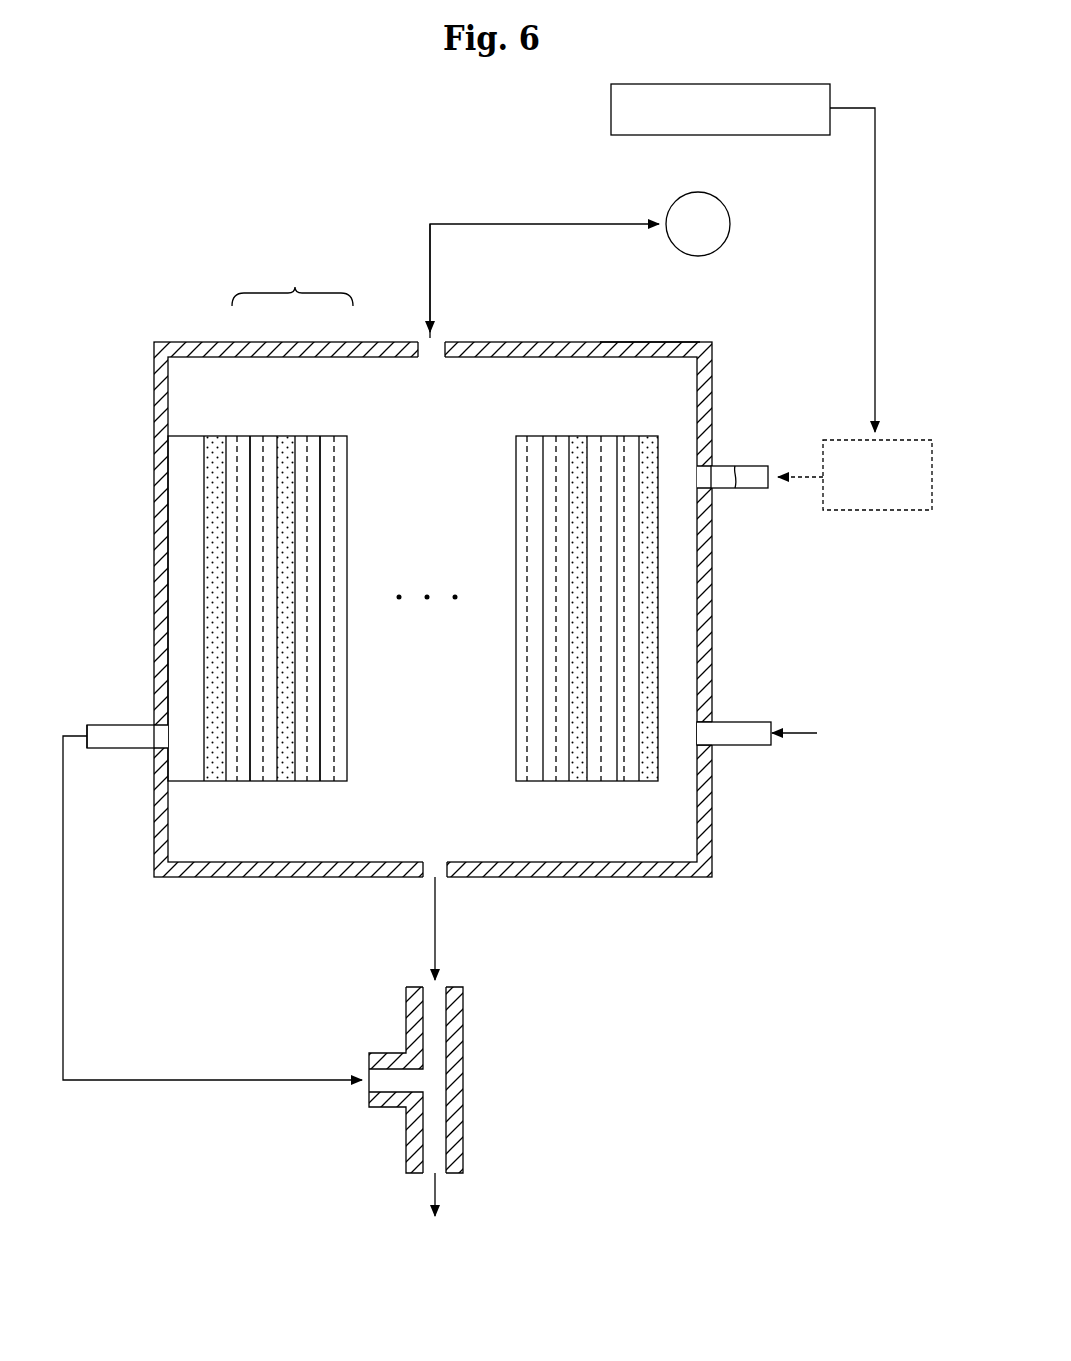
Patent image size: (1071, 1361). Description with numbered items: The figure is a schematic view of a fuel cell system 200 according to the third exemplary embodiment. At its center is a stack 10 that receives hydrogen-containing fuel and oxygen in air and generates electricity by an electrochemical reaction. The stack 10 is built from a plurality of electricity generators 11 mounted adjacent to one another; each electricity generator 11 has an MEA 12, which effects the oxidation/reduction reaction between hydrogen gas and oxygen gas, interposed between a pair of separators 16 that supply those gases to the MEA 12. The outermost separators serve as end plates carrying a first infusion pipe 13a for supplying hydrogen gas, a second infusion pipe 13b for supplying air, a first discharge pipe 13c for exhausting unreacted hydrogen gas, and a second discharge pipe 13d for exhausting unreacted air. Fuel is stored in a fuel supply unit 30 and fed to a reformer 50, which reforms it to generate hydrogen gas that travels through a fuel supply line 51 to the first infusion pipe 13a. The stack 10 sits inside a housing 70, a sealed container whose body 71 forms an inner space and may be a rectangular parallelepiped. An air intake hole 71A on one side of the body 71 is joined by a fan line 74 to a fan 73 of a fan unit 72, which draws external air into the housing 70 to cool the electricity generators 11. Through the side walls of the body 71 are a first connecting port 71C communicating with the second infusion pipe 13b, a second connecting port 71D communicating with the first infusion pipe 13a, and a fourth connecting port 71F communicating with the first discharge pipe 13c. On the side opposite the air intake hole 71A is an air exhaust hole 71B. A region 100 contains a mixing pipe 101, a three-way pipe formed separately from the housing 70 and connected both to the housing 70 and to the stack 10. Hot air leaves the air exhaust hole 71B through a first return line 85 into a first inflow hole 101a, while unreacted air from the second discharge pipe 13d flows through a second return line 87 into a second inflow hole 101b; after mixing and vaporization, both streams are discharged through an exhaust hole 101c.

The fuel cell system 200 is at (146, 236).
The stack 10 is at (252, 826).
The electricity generator 11 is at (292, 282).
The MEA 12 is at (285, 436).
The separator 16 is at (263, 436).
The housing 70 is at (714, 332).
The body 71 is at (651, 342).
The air intake hole 71A is at (440, 341).
The air exhaust hole 71B is at (426, 878).
The first connecting port 71C is at (713, 723).
The second connecting port 71D is at (713, 482).
The fourth connecting port 71F is at (152, 729).
The first infusion pipe 13a is at (754, 466).
The second infusion pipe 13b is at (723, 467).
The first discharge pipe 13c is at (130, 724).
The second discharge pipe 13d is at (108, 748).
The fuel supply unit 30 is at (611, 105).
The reformer 50 is at (900, 440).
The fuel supply line 51 is at (800, 477).
The fan unit 72 is at (655, 260).
The fan 73 is at (706, 194).
The fan line 74 is at (572, 226).
The first return line 85 is at (437, 913).
The second return line 87 is at (64, 965).
The region 100 is at (429, 1086).
The mixing pipe 101 is at (464, 1073).
The first inflow hole 101a is at (440, 987).
The second inflow hole 101b is at (369, 1070).
The exhaust hole 101c is at (437, 1175).